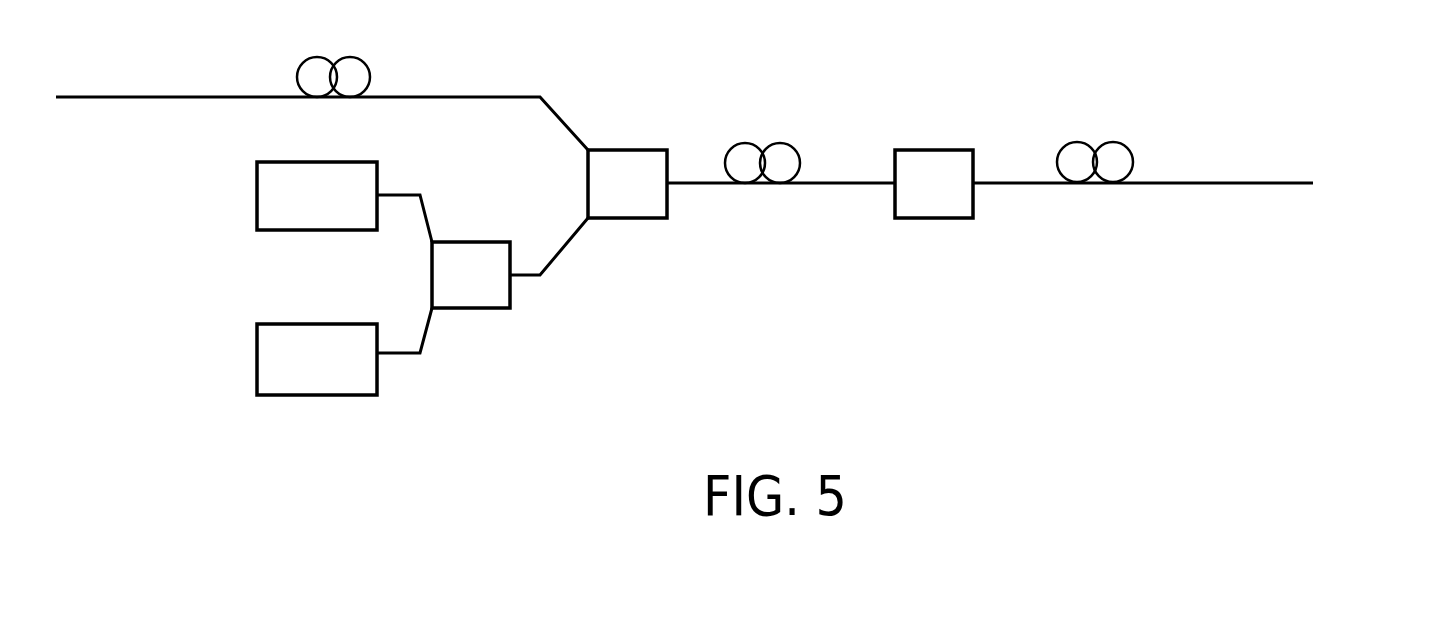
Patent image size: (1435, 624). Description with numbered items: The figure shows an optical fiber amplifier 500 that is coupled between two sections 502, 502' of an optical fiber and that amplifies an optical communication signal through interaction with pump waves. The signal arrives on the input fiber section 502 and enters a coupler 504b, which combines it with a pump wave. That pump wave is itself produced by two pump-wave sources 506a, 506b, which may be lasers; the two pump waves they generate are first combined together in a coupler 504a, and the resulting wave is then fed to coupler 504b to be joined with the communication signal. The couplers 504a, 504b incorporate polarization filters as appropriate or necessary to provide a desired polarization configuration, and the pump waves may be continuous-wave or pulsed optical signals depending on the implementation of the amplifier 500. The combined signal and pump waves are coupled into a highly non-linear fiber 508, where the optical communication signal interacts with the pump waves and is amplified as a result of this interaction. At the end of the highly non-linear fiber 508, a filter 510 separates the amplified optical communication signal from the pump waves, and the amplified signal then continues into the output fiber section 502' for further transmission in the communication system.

The optical fiber amplifier 500 is at (796, 245).
The section of optical fiber 502 is at (322, 90).
The section of optical fiber 502' is at (1191, 164).
The coupler 504a is at (468, 308).
The coupler 504b is at (618, 150).
The pump-wave source 506a is at (257, 198).
The pump-wave source 506b is at (257, 362).
The highly non-linear fiber 508 is at (835, 183).
The filter 510 is at (943, 150).